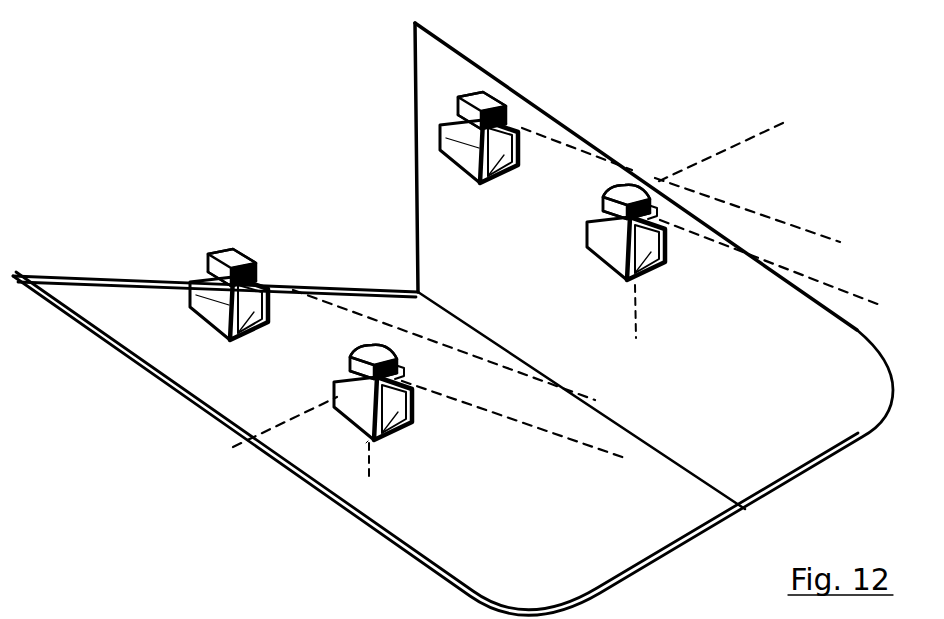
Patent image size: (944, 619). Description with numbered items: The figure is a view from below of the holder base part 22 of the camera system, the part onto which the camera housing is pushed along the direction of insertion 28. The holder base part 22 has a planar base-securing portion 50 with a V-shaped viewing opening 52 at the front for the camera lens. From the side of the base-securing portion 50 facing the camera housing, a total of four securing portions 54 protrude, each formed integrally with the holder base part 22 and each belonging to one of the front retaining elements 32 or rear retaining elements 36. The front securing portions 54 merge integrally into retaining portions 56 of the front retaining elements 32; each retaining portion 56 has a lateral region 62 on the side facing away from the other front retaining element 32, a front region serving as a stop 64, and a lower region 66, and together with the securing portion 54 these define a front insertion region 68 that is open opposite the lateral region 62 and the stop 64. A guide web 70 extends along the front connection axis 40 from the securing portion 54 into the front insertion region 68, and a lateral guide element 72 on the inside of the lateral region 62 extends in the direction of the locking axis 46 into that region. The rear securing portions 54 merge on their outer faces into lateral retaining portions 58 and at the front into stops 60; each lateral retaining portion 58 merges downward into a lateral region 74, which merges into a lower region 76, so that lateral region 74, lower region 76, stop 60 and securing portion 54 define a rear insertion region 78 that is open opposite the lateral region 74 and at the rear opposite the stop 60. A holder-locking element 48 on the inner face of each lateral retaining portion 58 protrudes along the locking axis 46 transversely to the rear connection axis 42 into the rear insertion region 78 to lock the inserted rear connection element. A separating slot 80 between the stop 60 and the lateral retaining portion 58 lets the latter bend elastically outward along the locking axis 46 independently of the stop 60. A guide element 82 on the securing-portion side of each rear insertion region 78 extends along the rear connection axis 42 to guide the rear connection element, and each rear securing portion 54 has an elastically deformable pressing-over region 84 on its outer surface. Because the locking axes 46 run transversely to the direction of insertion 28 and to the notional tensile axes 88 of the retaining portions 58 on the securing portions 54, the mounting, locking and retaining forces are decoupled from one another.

The holder base part 22 is at (78, 97).
The direction of insertion 28 is at (693, 431).
The front retaining element 32 is at (442, 131).
The rear retaining element 36 is at (366, 441).
The front connection axis 40 is at (588, 398).
The rear connection axis 42 is at (530, 423).
The locking axis 46 is at (232, 447).
The holder-locking element 48 is at (700, 223).
The base-securing portion 50 is at (412, 263).
The viewing opening 52 is at (266, 209).
The securing portion 54 is at (206, 300).
The retaining portion 56 is at (239, 249).
The lateral retaining portion 58 is at (414, 380).
The stop 60 is at (346, 365).
The lateral region 62 is at (188, 282).
The stop 64 is at (210, 252).
The lower region 66 is at (229, 249).
The front insertion region 68 is at (256, 268).
The guide web 70 is at (262, 280).
The lateral guide element 72 is at (498, 167).
The lateral region 74 is at (340, 372).
The lower region 76 is at (383, 352).
The rear insertion region 78 is at (398, 368).
The separating slot 80 is at (351, 360).
The guide element 82 is at (584, 213).
The pressing-over region 84 is at (363, 350).
The tensile axis 88 is at (370, 458).